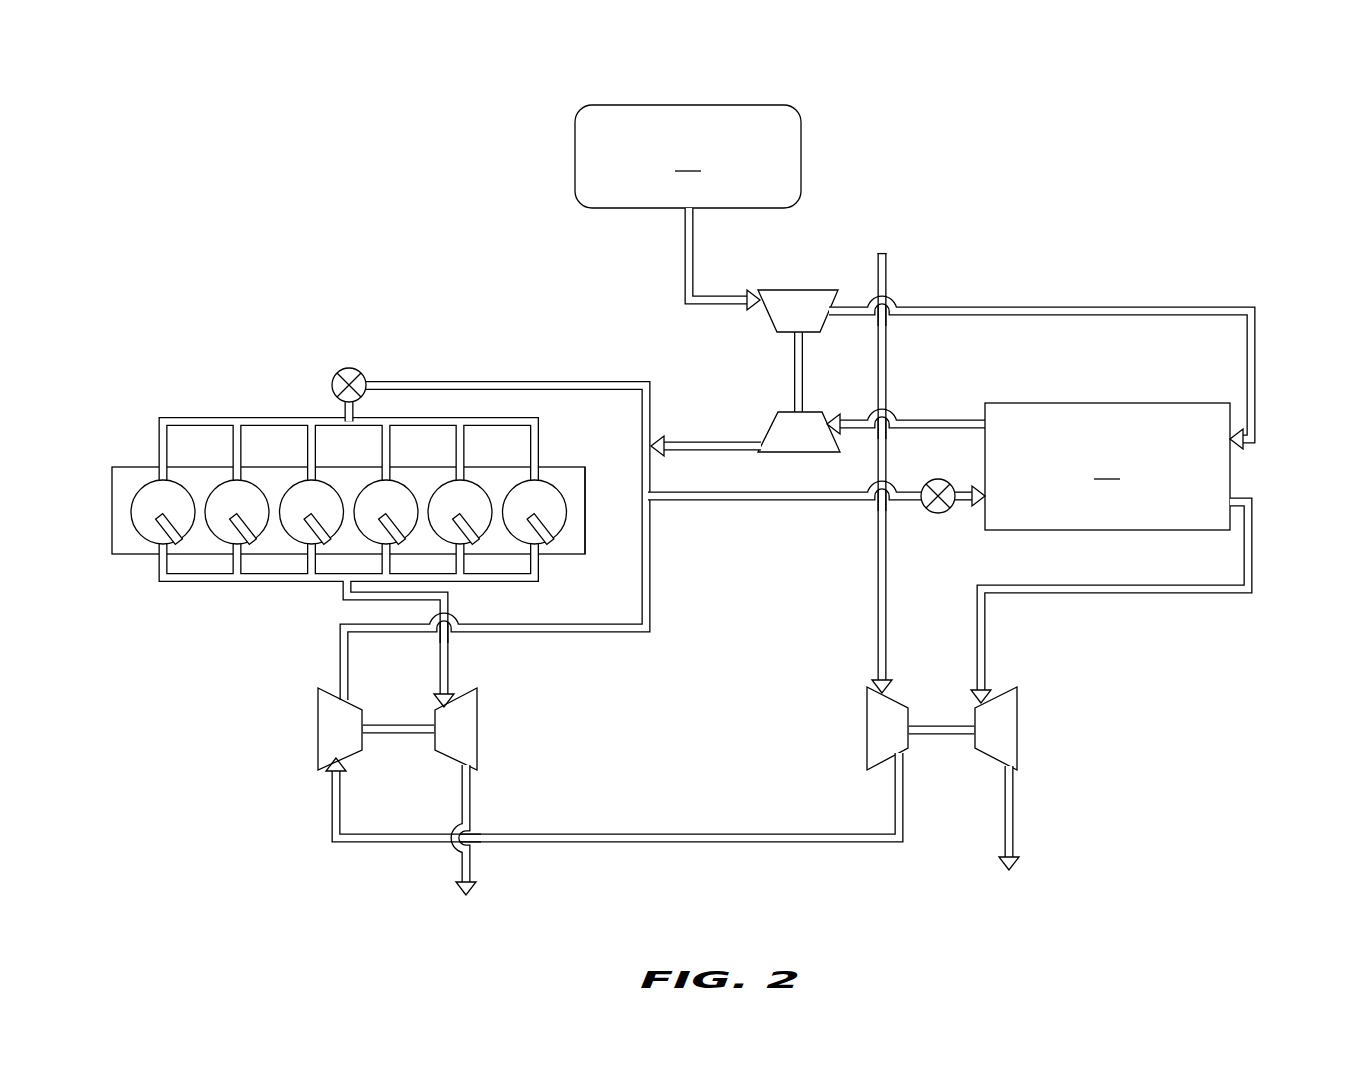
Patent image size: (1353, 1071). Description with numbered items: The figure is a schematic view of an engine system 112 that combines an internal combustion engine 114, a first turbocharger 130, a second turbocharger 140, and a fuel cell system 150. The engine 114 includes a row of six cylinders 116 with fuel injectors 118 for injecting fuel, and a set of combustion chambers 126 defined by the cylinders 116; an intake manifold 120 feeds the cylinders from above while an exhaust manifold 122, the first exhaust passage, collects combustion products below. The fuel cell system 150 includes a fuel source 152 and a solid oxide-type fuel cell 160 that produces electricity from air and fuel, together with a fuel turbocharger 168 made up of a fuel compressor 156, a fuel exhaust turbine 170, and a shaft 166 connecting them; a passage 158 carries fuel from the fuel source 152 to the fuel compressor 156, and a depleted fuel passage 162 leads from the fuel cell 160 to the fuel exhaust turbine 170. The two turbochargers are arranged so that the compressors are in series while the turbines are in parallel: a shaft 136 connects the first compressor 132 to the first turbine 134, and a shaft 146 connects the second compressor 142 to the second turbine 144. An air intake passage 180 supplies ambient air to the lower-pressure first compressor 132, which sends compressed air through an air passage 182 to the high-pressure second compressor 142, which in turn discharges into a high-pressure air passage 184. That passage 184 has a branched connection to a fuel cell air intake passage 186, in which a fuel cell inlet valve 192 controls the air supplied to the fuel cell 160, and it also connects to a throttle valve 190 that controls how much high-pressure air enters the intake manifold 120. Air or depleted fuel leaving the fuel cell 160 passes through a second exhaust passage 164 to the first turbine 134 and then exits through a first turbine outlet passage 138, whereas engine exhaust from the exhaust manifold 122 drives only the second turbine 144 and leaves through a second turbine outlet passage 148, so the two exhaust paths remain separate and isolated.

The engine system 112 is at (303, 124).
The internal combustion engine 114 is at (113, 550).
The cylinders 116 is at (143, 492).
The fuel injectors 118 is at (163, 547).
The intake manifold 120 is at (250, 416).
The exhaust manifold 122 is at (282, 583).
The combustion chambers 126 is at (590, 493).
The first turbocharger 130 is at (950, 747).
The first compressor 132 is at (866, 740).
The first turbine 134 is at (1016, 741).
The shaft 136 is at (932, 737).
The first turbine outlet passage 138 is at (1013, 851).
The second turbocharger 140 is at (416, 754).
The second compressor 142 is at (317, 732).
The second turbine 144 is at (468, 749).
The shaft 146 is at (390, 735).
The second turbine outlet passage 148 is at (462, 862).
The fuel cell system 150 is at (1077, 305).
The fuel source 152 is at (688, 156).
The fuel compressor 156 is at (812, 299).
The passage 158 is at (765, 296).
The fuel cell 160 is at (1107, 466).
The depleted fuel passage 162 is at (900, 433).
The second exhaust passage 164 is at (1252, 546).
The shaft 166 is at (794, 356).
The fuel turbocharger 168 is at (782, 336).
The fuel exhaust turbine 170 is at (809, 448).
The air intake passage 180 is at (887, 270).
The air passage 182 is at (780, 844).
The high-pressure air passage 184 is at (522, 634).
The fuel cell air intake passage 186 is at (825, 502).
The throttle valve 190 is at (350, 367).
The fuel cell inlet valve 192 is at (938, 514).